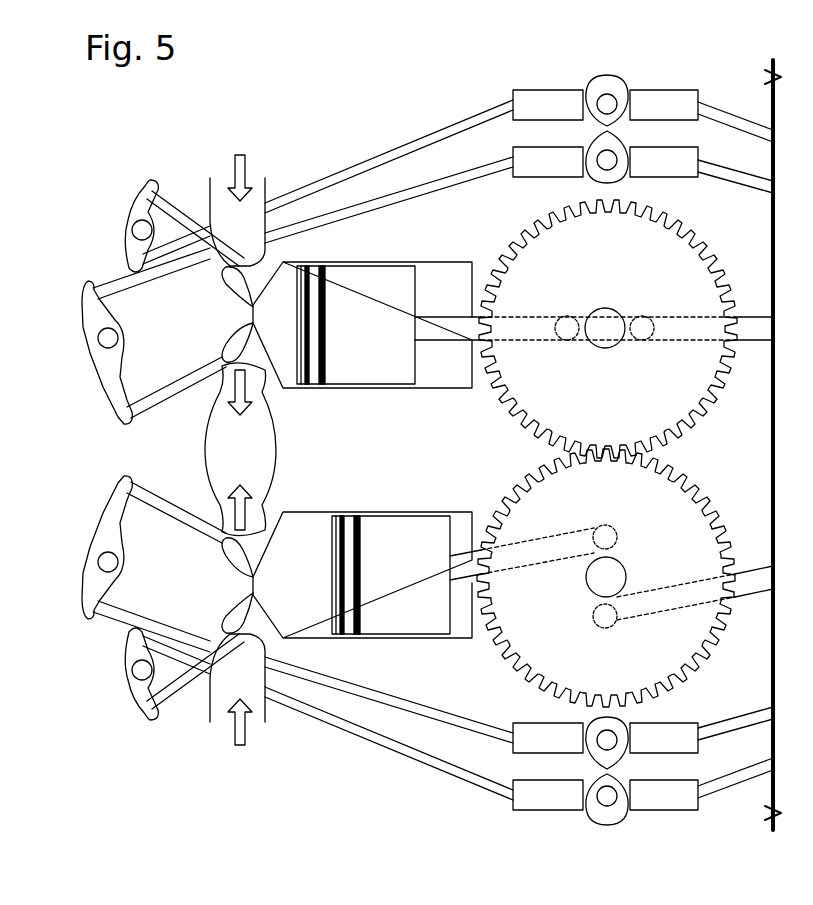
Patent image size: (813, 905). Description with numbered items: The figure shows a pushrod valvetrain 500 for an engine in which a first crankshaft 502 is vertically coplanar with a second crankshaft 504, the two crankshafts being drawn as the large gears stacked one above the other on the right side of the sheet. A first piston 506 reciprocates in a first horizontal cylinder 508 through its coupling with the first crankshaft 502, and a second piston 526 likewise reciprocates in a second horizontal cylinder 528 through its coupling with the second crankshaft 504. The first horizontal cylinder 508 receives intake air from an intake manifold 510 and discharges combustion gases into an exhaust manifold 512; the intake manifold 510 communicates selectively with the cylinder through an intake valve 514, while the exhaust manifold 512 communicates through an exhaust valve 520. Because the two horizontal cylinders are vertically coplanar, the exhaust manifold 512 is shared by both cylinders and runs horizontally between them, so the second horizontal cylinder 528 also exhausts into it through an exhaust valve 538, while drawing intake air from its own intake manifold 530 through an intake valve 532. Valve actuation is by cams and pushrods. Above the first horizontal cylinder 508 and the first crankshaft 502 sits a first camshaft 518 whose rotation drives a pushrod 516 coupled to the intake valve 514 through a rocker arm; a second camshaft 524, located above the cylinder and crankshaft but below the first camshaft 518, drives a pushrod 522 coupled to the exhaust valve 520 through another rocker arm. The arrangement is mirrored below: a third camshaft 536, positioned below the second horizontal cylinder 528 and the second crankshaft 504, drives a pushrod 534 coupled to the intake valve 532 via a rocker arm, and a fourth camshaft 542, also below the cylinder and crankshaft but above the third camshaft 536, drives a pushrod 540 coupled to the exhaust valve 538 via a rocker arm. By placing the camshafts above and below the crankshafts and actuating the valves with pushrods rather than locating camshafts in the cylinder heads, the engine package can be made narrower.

The pushrod valvetrain 500 is at (249, 98).
The first crankshaft 502 is at (585, 262).
The second crankshaft 504 is at (587, 504).
The first piston 506 is at (408, 335).
The first horizontal cylinder 508 is at (306, 262).
The intake manifold 510 is at (258, 223).
The exhaust manifold 512 is at (258, 458).
The intake valve 514 is at (172, 204).
The pushrod 516 is at (378, 156).
The first camshaft 518 is at (590, 88).
The exhaust valve 520 is at (170, 384).
The pushrod 522 is at (418, 200).
The second camshaft 524 is at (590, 143).
The second piston 526 is at (409, 580).
The second horizontal cylinder 528 is at (304, 512).
The intake manifold 530 is at (258, 689).
The intake valve 532 is at (175, 696).
The pushrod 534 is at (368, 740).
The third camshaft 536 is at (594, 828).
The exhaust valve 538 is at (166, 508).
The pushrod 540 is at (405, 708).
The fourth camshaft 542 is at (594, 772).